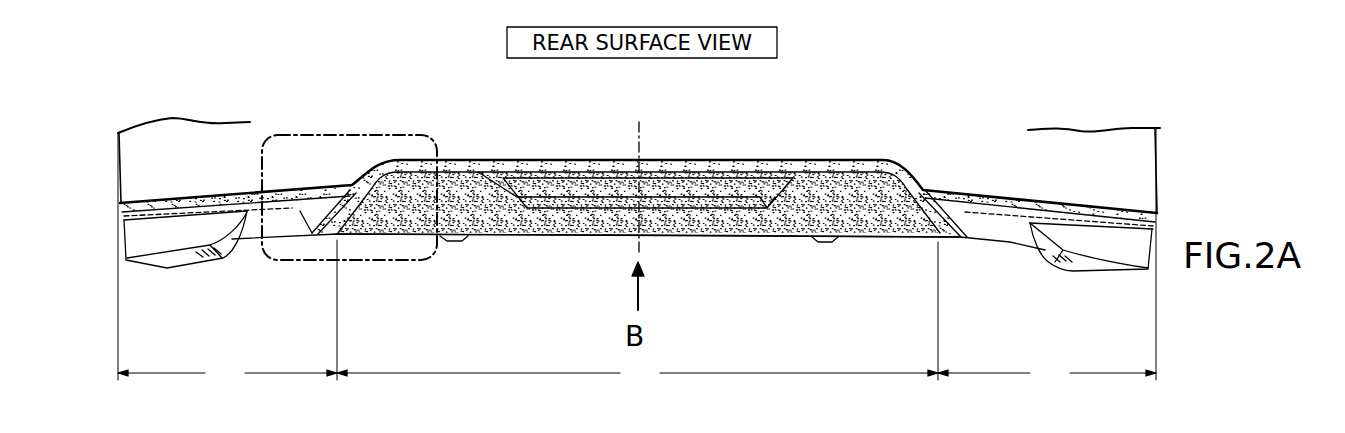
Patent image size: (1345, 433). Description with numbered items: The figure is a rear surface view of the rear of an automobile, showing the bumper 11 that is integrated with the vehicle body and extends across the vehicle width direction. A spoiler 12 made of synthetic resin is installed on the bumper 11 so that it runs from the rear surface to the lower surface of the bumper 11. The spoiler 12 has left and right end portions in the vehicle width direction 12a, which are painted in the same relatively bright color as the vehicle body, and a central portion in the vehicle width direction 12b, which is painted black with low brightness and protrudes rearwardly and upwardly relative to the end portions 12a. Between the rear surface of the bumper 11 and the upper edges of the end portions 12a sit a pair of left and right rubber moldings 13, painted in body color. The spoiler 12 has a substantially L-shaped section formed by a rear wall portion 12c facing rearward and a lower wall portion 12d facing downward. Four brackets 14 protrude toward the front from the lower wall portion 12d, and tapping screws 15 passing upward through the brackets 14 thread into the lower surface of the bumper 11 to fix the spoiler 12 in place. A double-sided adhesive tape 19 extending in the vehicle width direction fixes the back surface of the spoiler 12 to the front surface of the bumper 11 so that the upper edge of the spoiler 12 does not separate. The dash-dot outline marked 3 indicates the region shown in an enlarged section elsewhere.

The bumper 11 is at (118, 166).
The spoiler 12 is at (712, 160).
The end portions in the vehicle width direction 12a is at (637, 256).
The central portion in the vehicle width direction 12b is at (637, 373).
The rear wall portion 12c is at (287, 213).
The lower wall portion 12d is at (703, 237).
The moldings 13 is at (200, 197).
The brackets 14 is at (200, 266).
The tapping screws 15 is at (216, 266).
The double-sided adhesive tape 19 is at (299, 213).
The section line of FIG. 3 is at (437, 137).